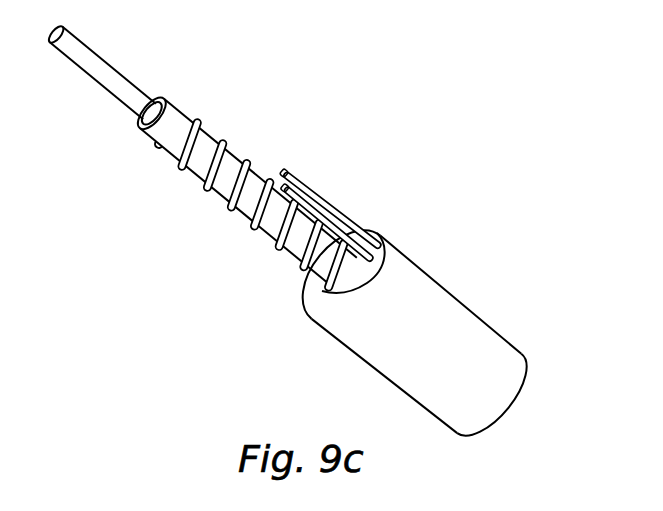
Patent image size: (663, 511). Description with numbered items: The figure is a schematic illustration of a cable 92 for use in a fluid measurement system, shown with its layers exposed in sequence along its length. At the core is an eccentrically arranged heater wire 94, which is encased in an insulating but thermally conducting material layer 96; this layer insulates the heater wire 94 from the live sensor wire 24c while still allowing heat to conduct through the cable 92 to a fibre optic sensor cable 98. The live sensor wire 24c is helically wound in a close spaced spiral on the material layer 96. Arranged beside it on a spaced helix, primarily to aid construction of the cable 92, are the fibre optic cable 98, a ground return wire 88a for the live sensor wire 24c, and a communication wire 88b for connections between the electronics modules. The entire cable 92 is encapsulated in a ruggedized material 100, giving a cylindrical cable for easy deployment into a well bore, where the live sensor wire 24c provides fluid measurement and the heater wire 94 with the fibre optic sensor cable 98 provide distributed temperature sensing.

The cable 92 is at (321, 236).
The heater wire 94 is at (92, 58).
The live sensor wire 24c is at (182, 186).
The insulating but thermally conducting material layer 96 is at (249, 204).
The ground return wire 88a is at (346, 222).
The communication wire 88b is at (315, 220).
The fibre optic sensor cable 98 is at (364, 218).
The ruggedized material 100 is at (488, 342).